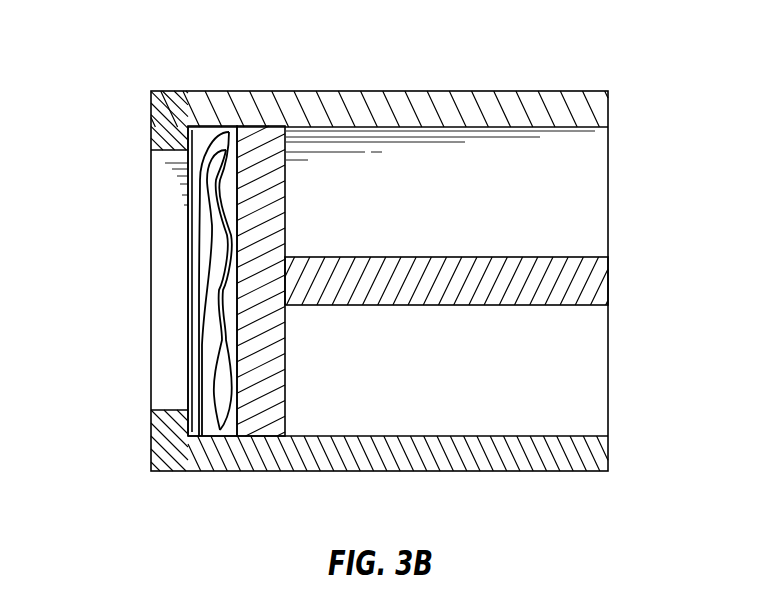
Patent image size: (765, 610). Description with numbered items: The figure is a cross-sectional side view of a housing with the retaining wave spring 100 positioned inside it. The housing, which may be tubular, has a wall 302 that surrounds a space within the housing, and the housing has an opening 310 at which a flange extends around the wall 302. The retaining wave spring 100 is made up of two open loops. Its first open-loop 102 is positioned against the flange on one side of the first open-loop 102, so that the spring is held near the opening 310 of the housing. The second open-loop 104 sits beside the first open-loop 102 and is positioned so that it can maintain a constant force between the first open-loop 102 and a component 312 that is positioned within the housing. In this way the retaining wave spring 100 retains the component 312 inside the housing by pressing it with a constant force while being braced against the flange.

The retaining wave spring 100 is at (186, 289).
The first open-loop 102 is at (199, 437).
The second open-loop 104 is at (220, 431).
The wall 302 is at (383, 90).
The opening 310 is at (148, 335).
The component 312 is at (286, 187).